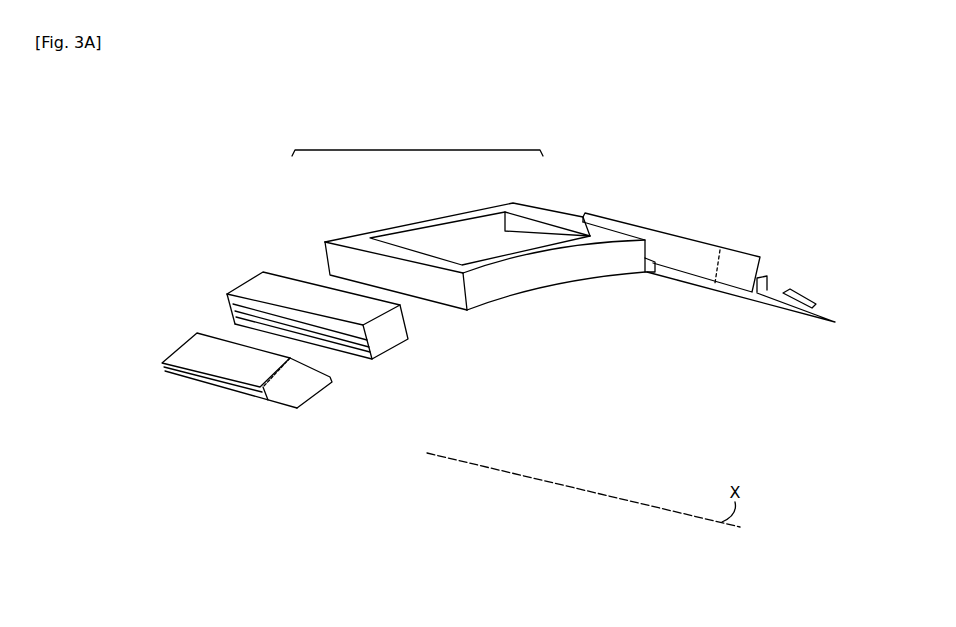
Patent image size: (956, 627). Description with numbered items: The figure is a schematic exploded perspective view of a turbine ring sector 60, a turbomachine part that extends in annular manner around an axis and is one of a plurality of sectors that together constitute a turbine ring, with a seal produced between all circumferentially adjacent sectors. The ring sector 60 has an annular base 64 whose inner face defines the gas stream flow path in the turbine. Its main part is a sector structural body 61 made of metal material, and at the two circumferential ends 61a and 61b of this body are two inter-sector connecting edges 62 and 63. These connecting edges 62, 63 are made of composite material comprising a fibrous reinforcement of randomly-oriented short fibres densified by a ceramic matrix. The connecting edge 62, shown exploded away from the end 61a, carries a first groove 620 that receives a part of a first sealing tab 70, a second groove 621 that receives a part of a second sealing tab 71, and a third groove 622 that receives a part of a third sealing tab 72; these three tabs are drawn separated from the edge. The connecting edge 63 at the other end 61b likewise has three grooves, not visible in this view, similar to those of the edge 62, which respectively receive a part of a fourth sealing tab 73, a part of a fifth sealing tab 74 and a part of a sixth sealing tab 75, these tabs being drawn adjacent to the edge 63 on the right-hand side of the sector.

The turbine ring sector 60 is at (416, 150).
The sector structural body 61 is at (423, 220).
The circumferential end 61a is at (460, 290).
The circumferential end 61b is at (647, 271).
The inter-sector connecting edge 62 is at (280, 289).
The inter-sector connecting edge 63 is at (610, 218).
The annular base 64 is at (541, 275).
The first groove 620 is at (352, 360).
The second groove 621 is at (388, 345).
The third groove 622 is at (235, 320).
The first sealing tab 70 is at (300, 388).
The second sealing tab 71 is at (267, 400).
The third sealing tab 72 is at (195, 366).
The fourth sealing tab 73 is at (804, 317).
The fifth sealing tab 74 is at (803, 295).
The sixth sealing tab 75 is at (763, 278).